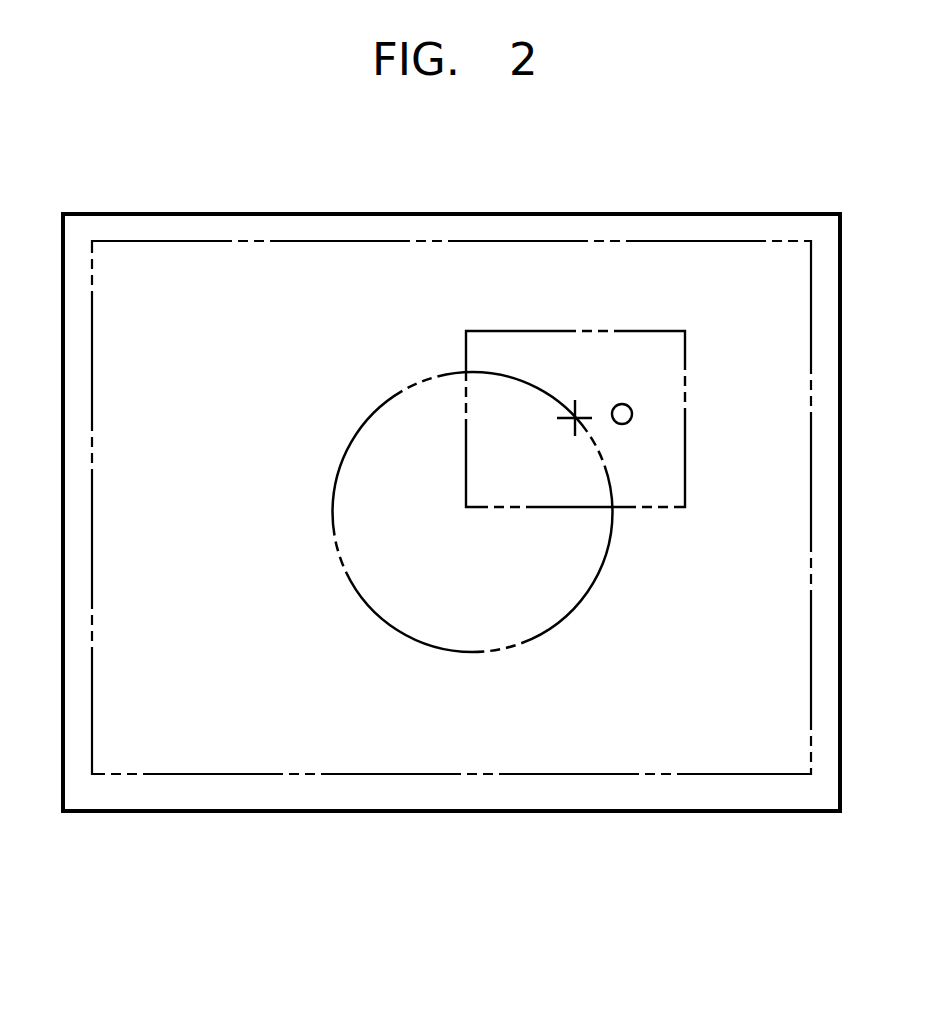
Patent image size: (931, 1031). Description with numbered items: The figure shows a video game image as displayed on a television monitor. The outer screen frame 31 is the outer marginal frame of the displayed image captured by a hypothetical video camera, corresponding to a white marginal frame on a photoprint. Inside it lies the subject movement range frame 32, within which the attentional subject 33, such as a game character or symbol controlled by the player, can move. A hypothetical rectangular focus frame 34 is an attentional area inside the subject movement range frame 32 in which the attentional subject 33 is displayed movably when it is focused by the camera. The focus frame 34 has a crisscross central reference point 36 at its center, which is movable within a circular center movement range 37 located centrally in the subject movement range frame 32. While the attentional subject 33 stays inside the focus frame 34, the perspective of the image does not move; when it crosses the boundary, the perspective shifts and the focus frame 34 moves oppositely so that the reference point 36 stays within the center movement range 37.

The outer screen frame 31 is at (291, 813).
The subject movement range frame 32 is at (224, 241).
The attentional subject 33 is at (628, 405).
The rectangular focus frame 34 is at (499, 331).
The crisscross central reference point 36 is at (577, 415).
The circular center movement range 37 is at (568, 620).